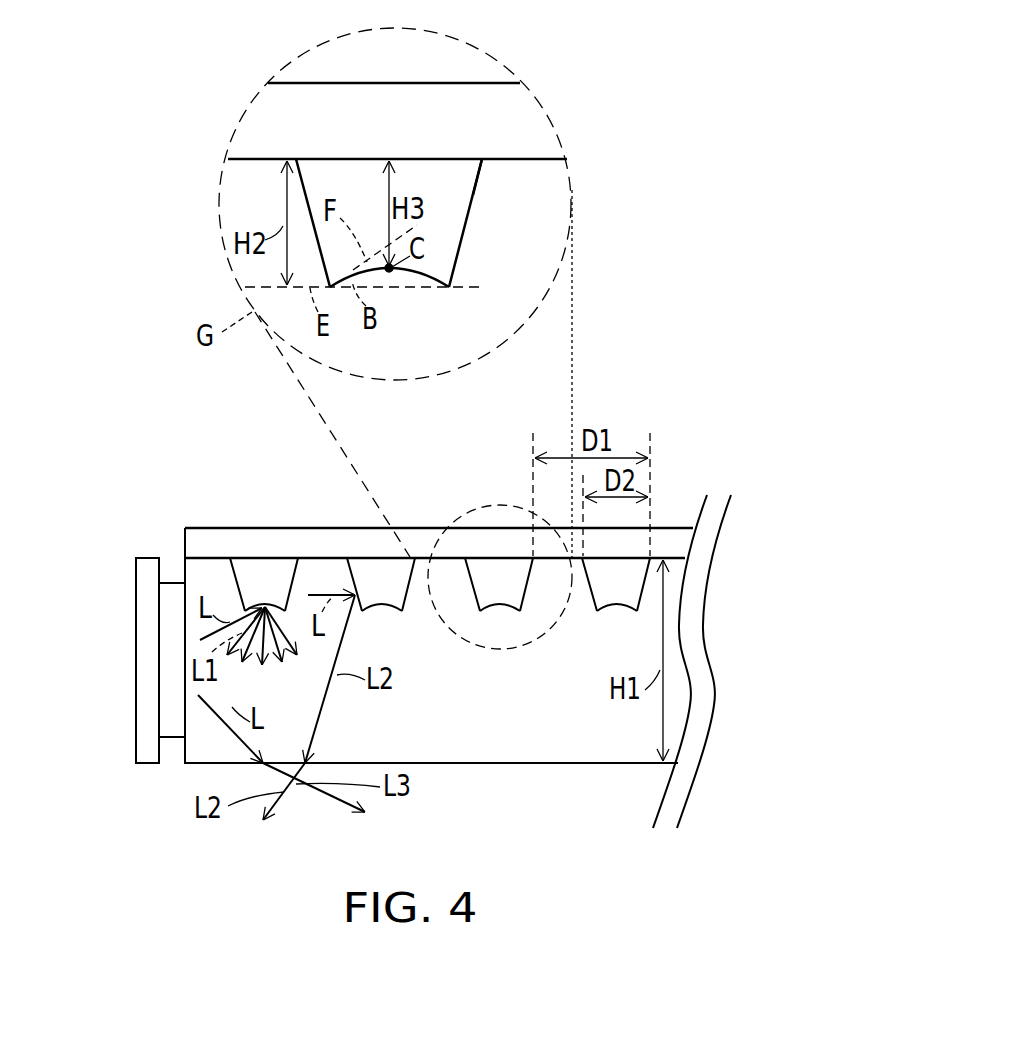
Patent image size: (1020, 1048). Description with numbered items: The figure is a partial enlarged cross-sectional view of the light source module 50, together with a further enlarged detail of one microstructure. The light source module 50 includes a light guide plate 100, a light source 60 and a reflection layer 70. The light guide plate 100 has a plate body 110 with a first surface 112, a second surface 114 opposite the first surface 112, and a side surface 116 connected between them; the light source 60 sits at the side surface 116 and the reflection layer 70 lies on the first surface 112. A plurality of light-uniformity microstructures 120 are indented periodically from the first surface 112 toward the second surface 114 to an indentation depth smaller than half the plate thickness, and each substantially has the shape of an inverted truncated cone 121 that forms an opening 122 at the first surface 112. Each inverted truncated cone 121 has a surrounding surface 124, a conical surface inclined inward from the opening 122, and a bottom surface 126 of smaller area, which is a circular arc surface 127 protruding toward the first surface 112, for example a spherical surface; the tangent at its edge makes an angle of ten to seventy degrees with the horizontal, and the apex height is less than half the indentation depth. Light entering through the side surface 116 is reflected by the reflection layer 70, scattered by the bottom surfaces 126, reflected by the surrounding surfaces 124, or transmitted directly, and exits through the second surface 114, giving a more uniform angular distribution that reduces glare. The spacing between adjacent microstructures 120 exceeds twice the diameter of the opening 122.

The light source module 50 is at (725, 402).
The light source 60 is at (136, 597).
The reflection layer 70 is at (200, 537).
The light guide plate 100 is at (404, 440).
The plate body 110 is at (377, 699).
The first surface 112 is at (522, 155).
The second surface 114 is at (449, 765).
The side surface 116 is at (183, 705).
The light-uniformity microstructures 120 is at (440, 413).
The inverted truncated cone 121 is at (481, 170).
The opening 122 is at (345, 148).
The surrounding surface 124 is at (468, 224).
The bottom surface 126 is at (441, 482).
The circular arc surface 127 is at (434, 278).